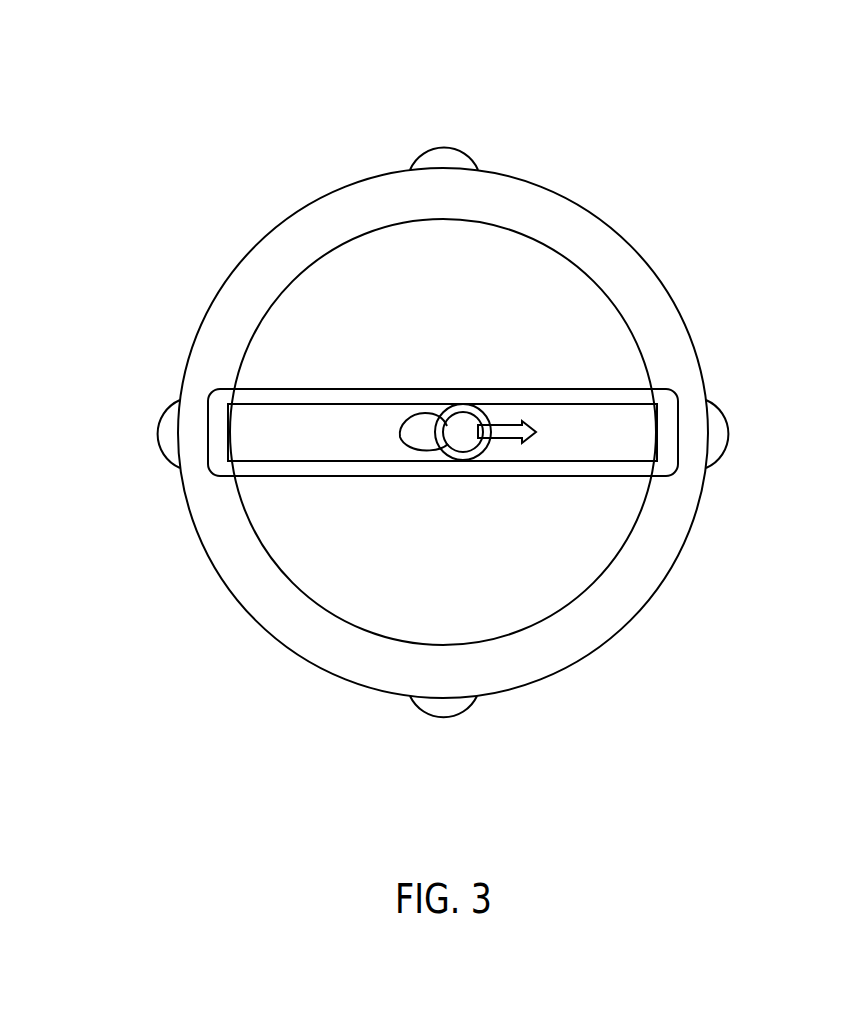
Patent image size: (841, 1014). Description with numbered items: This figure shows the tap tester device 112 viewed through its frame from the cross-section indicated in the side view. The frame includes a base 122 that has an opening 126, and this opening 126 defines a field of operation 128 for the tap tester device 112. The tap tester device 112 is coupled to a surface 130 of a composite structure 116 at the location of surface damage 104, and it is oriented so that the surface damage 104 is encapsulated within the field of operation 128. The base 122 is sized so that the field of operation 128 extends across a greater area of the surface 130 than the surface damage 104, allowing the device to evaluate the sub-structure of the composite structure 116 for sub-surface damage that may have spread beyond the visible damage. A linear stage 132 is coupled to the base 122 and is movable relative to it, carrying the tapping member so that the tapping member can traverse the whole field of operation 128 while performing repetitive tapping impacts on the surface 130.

The surface damage 104 is at (400, 440).
The tap tester device 112 is at (640, 93).
The composite structure 116 is at (776, 545).
The base 122 is at (674, 190).
The opening 126 is at (598, 305).
The field of operation 128 is at (461, 269).
The surface 130 is at (461, 589).
The linear stage 132 is at (625, 389).